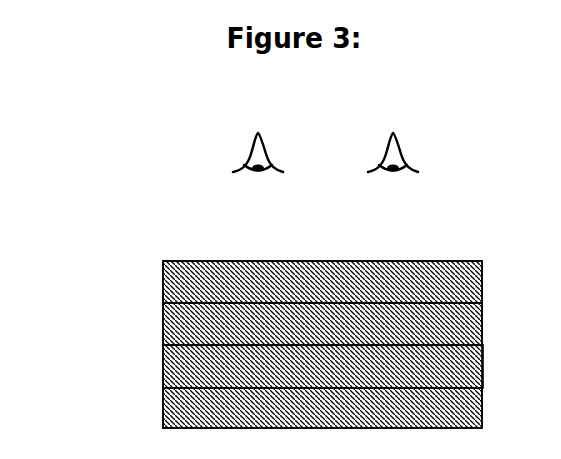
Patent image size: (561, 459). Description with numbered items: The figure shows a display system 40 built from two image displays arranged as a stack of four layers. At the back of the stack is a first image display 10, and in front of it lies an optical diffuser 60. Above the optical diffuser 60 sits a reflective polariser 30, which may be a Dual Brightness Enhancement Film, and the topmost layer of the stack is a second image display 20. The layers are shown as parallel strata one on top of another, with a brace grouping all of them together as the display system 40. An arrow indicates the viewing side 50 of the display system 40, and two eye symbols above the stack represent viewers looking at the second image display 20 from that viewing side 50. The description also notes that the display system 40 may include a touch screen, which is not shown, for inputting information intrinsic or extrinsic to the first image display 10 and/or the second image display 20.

The first image display 10 is at (197, 404).
The second image display 20 is at (197, 280).
The reflective polariser 30 is at (197, 320).
The optical diffuser 60 is at (197, 366).
The display system 40 is at (90, 257).
The viewing side 50 is at (326, 244).